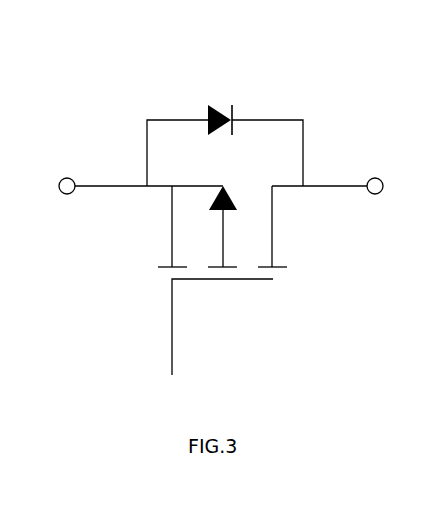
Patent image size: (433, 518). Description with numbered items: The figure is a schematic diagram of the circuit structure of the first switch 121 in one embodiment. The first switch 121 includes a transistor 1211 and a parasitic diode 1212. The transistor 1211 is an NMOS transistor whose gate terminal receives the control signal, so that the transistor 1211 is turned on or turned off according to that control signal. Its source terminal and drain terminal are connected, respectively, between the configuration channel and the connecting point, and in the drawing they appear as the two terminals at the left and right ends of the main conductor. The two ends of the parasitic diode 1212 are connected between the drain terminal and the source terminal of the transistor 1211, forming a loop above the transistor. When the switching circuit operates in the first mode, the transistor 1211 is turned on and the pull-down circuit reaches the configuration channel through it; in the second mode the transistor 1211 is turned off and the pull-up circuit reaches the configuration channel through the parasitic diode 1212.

The first switch 121 is at (70, 80).
The transistor 1211 is at (172, 223).
The parasitic diode 1212 is at (227, 104).